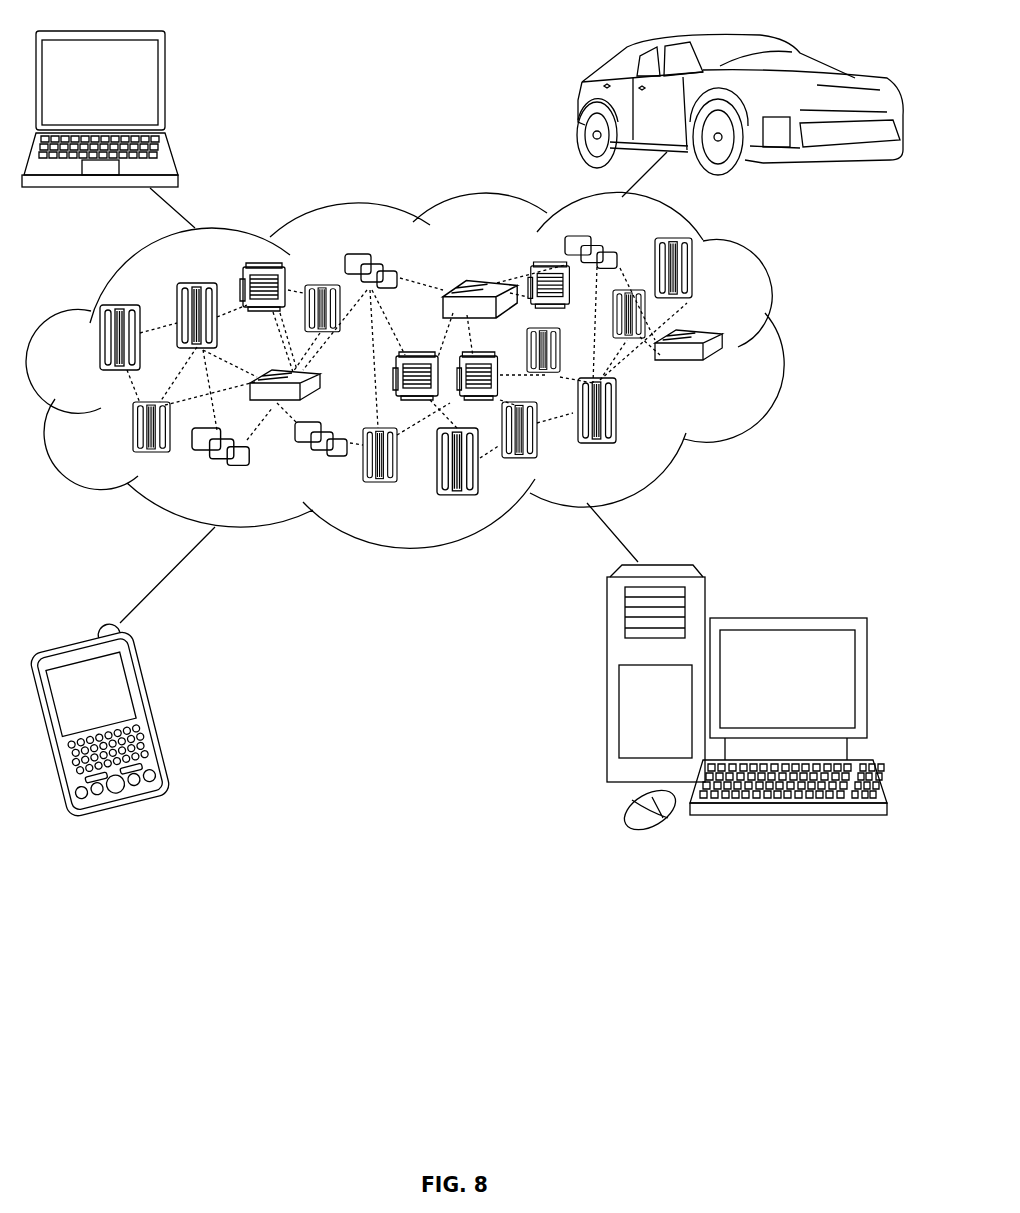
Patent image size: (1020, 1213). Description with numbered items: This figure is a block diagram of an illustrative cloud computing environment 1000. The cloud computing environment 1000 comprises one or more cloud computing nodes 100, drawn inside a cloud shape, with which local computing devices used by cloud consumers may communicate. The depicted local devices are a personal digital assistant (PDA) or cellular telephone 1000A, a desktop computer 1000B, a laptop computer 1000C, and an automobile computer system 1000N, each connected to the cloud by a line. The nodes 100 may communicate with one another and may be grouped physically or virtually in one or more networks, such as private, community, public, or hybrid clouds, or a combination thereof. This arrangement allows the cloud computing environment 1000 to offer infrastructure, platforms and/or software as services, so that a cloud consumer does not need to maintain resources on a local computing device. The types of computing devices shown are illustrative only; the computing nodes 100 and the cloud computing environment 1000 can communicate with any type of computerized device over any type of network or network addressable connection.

The cloud computing environment 1000 is at (783, 349).
The cloud computing nodes 100 is at (742, 379).
The personal digital assistant (PDA) or cellular telephone 1000A is at (158, 707).
The desktop computer 1000B is at (797, 600).
The laptop computer 1000C is at (167, 90).
The automobile computer system 1000N is at (577, 100).